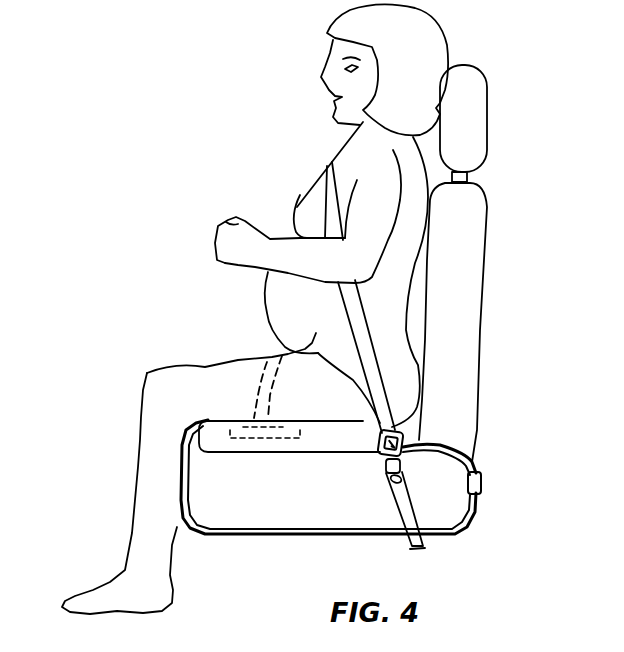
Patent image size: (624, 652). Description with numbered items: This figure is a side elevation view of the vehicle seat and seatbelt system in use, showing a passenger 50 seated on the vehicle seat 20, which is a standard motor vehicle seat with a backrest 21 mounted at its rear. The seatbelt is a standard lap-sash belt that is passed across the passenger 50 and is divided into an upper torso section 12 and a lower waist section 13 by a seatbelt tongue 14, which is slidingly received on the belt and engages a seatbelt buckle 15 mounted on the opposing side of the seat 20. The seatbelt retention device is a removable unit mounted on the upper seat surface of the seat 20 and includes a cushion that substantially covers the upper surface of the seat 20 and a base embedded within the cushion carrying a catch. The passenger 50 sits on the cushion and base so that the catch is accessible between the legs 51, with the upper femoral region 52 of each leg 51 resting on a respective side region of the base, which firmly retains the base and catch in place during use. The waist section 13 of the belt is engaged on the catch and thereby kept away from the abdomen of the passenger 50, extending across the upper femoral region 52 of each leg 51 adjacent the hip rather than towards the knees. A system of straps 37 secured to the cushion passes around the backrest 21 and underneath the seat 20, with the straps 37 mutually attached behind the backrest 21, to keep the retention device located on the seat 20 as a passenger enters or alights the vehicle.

The upper torso section 12 is at (320, 193).
The lower waist section 13 is at (290, 352).
The seatbelt tongue 14 is at (408, 464).
The seatbelt buckle 15 is at (405, 488).
The vehicle seat 20 is at (258, 500).
The backrest 21 is at (453, 313).
The straps 37 is at (430, 443).
The passenger 50 is at (348, 163).
The legs 51 is at (227, 419).
The upper femoral region 52 is at (255, 357).